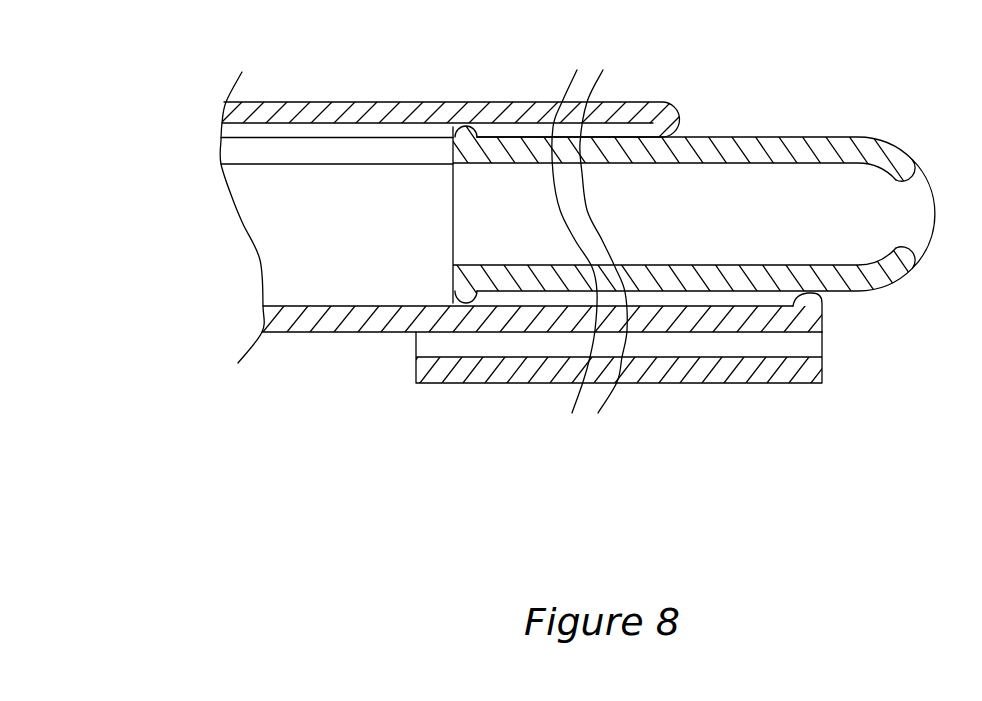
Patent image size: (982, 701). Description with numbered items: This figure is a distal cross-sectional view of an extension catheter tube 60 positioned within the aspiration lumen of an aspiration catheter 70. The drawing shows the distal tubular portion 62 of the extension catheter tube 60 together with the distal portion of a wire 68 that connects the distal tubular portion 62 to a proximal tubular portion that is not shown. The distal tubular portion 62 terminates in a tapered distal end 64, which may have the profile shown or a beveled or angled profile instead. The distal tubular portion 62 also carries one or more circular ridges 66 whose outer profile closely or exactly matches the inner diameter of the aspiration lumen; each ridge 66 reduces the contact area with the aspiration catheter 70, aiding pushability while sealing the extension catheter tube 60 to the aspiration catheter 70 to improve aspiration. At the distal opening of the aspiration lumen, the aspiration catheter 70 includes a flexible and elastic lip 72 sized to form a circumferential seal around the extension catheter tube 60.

The extension catheter tube 60 is at (753, 150).
The distal tubular portion 62 is at (613, 150).
The tapered distal end 64 is at (898, 172).
The circular ridge 66 is at (466, 124).
The wire 68 is at (299, 155).
The aspiration catheter 70 is at (357, 320).
The lip 72 is at (805, 292).